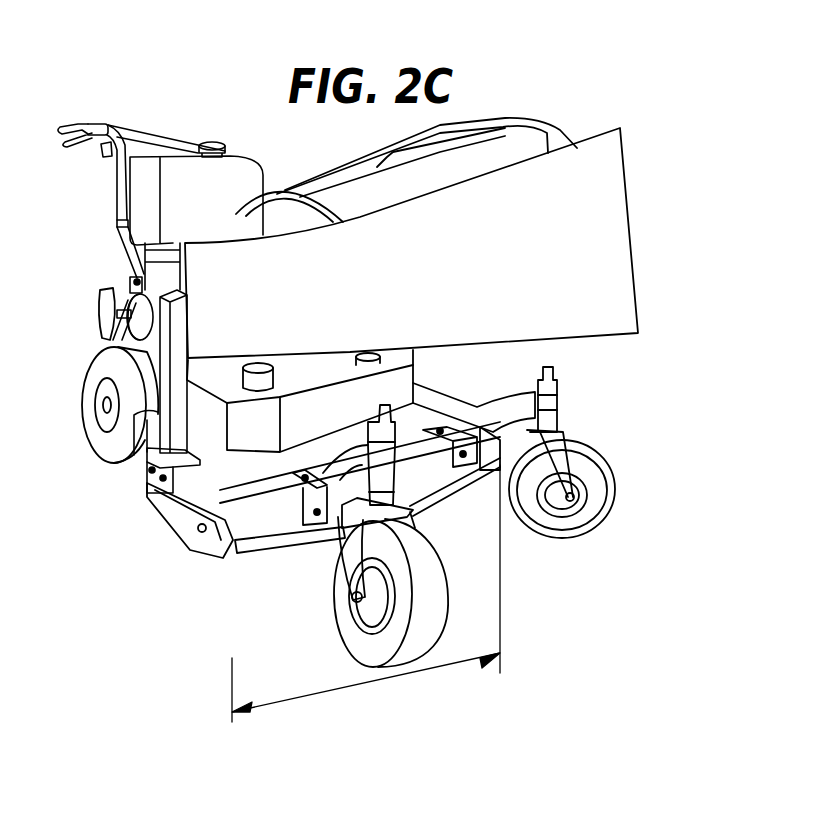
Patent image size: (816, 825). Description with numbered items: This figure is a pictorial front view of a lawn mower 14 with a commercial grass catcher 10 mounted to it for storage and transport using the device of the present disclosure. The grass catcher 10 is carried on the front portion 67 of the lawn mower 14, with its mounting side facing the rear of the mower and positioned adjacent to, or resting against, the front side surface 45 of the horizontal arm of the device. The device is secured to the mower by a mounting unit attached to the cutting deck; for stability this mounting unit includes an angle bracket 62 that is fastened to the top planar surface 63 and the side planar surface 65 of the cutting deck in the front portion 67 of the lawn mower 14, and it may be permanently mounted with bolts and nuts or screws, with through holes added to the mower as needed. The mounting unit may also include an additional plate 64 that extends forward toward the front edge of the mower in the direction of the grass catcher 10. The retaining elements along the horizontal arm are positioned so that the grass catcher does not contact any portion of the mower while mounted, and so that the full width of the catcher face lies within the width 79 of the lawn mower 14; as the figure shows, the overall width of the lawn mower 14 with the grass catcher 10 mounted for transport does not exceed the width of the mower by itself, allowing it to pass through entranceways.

The grass catcher 10 is at (603, 124).
The front side surface 45 is at (180, 302).
The angle bracket 62 is at (130, 437).
The side planar surface 65 is at (140, 458).
The lawn mower 14 is at (122, 490).
The top planar surface 63 is at (246, 482).
The additional plate 64 is at (170, 520).
The front portion 67 is at (249, 575).
The width of the lawn mower 79 is at (385, 678).